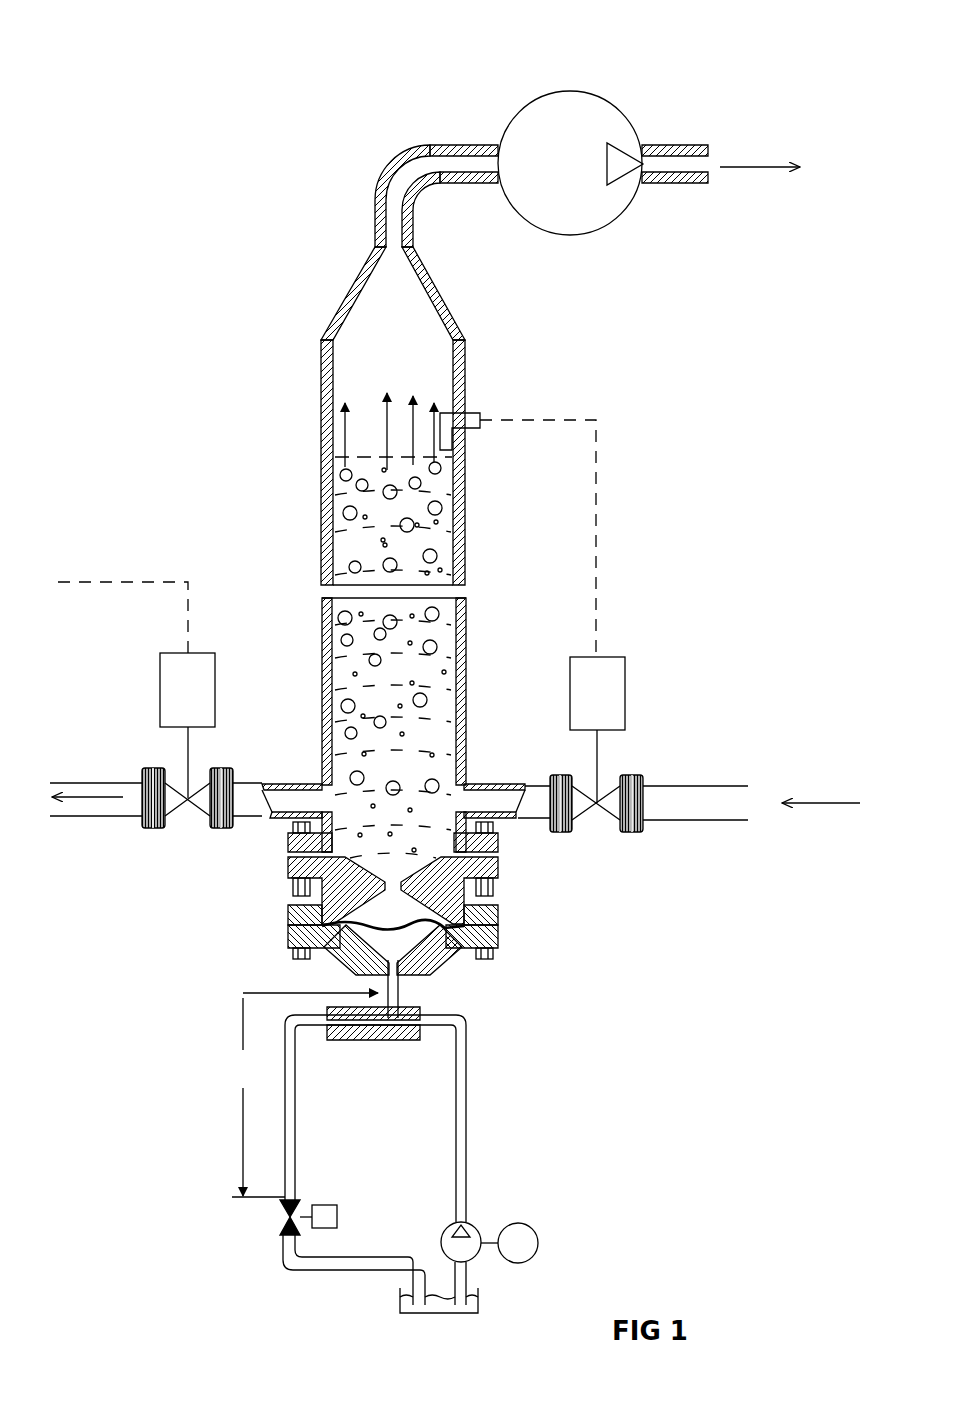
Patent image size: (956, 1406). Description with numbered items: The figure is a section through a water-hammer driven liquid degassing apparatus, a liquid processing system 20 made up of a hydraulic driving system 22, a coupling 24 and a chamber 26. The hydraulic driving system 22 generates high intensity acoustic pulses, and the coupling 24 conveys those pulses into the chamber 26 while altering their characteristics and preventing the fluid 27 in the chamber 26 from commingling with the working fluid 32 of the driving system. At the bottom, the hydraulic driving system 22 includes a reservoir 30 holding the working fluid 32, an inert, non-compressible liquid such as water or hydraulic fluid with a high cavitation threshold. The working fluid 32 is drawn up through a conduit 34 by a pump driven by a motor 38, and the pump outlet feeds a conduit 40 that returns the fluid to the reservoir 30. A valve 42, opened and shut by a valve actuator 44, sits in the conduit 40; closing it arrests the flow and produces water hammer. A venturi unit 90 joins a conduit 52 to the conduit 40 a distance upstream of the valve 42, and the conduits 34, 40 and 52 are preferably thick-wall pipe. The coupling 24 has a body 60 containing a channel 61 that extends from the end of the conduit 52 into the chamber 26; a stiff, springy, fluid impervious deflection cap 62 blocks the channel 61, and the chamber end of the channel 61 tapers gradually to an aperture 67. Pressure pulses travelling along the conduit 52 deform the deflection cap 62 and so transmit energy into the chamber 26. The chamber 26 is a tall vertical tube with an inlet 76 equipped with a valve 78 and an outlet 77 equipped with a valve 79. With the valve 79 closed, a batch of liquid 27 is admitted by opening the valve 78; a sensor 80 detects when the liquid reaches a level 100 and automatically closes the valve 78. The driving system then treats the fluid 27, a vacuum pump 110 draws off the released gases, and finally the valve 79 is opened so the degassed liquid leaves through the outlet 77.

The liquid processing system 20 is at (692, 440).
The hydraulic driving system 22 is at (505, 1095).
The coupling 24 is at (515, 942).
The chamber 26 is at (320, 432).
The fluid 27 is at (370, 547).
The reservoir 30 is at (400, 1302).
The working fluid 32 is at (440, 1305).
The conduit 34 is at (465, 1282).
The motor 38 is at (543, 1252).
The conduit 40 is at (462, 1190).
The valve 42 is at (283, 1222).
The valve actuator 44 is at (340, 1218).
The conduit 52 is at (403, 993).
The body 60 is at (300, 919).
The channel 61 is at (497, 918).
The deflection cap 62 is at (470, 955).
The aperture 67 is at (400, 882).
The inlet 76 is at (480, 775).
The outlet 77 is at (302, 777).
The valve 78 is at (600, 797).
The valve 79 is at (188, 830).
The sensor 80 is at (448, 408).
The venturi unit 90 is at (398, 1050).
The level 100 is at (368, 452).
The vacuum pump 110 is at (552, 80).